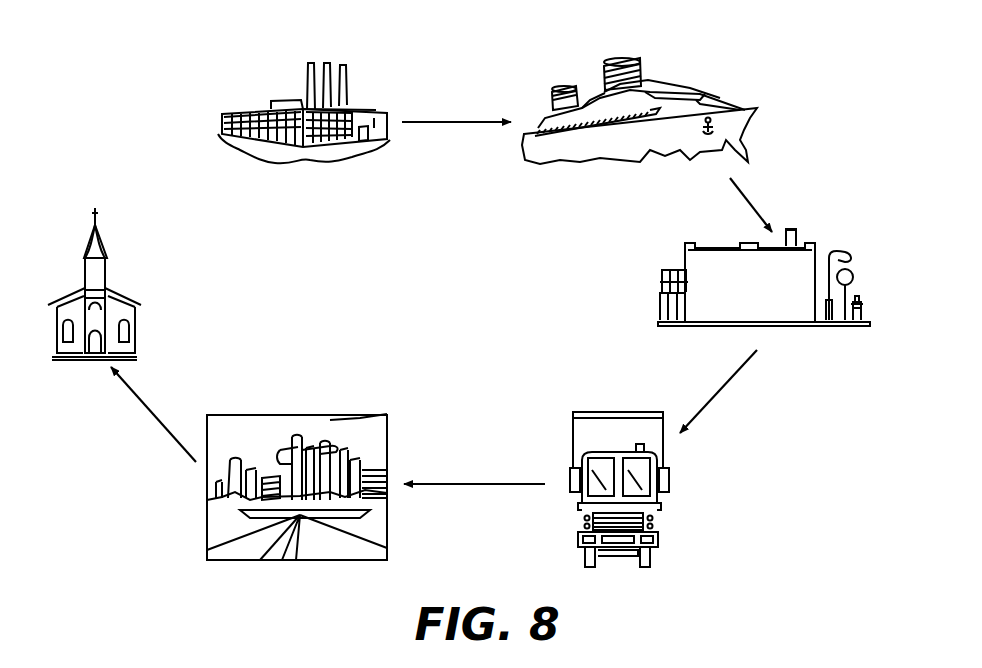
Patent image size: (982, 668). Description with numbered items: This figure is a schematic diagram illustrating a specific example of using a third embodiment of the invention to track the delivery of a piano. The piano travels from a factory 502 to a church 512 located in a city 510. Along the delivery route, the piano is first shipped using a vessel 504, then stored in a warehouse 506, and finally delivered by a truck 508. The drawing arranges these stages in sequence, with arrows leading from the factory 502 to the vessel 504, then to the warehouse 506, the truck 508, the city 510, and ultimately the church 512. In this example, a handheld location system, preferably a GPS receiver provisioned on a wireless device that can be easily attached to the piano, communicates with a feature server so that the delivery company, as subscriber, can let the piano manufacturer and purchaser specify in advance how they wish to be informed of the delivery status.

The factory 502 is at (304, 82).
The vessel 504 is at (667, 93).
The warehouse 506 is at (817, 243).
The truck 508 is at (670, 482).
The city 510 is at (323, 415).
The church 512 is at (97, 222).